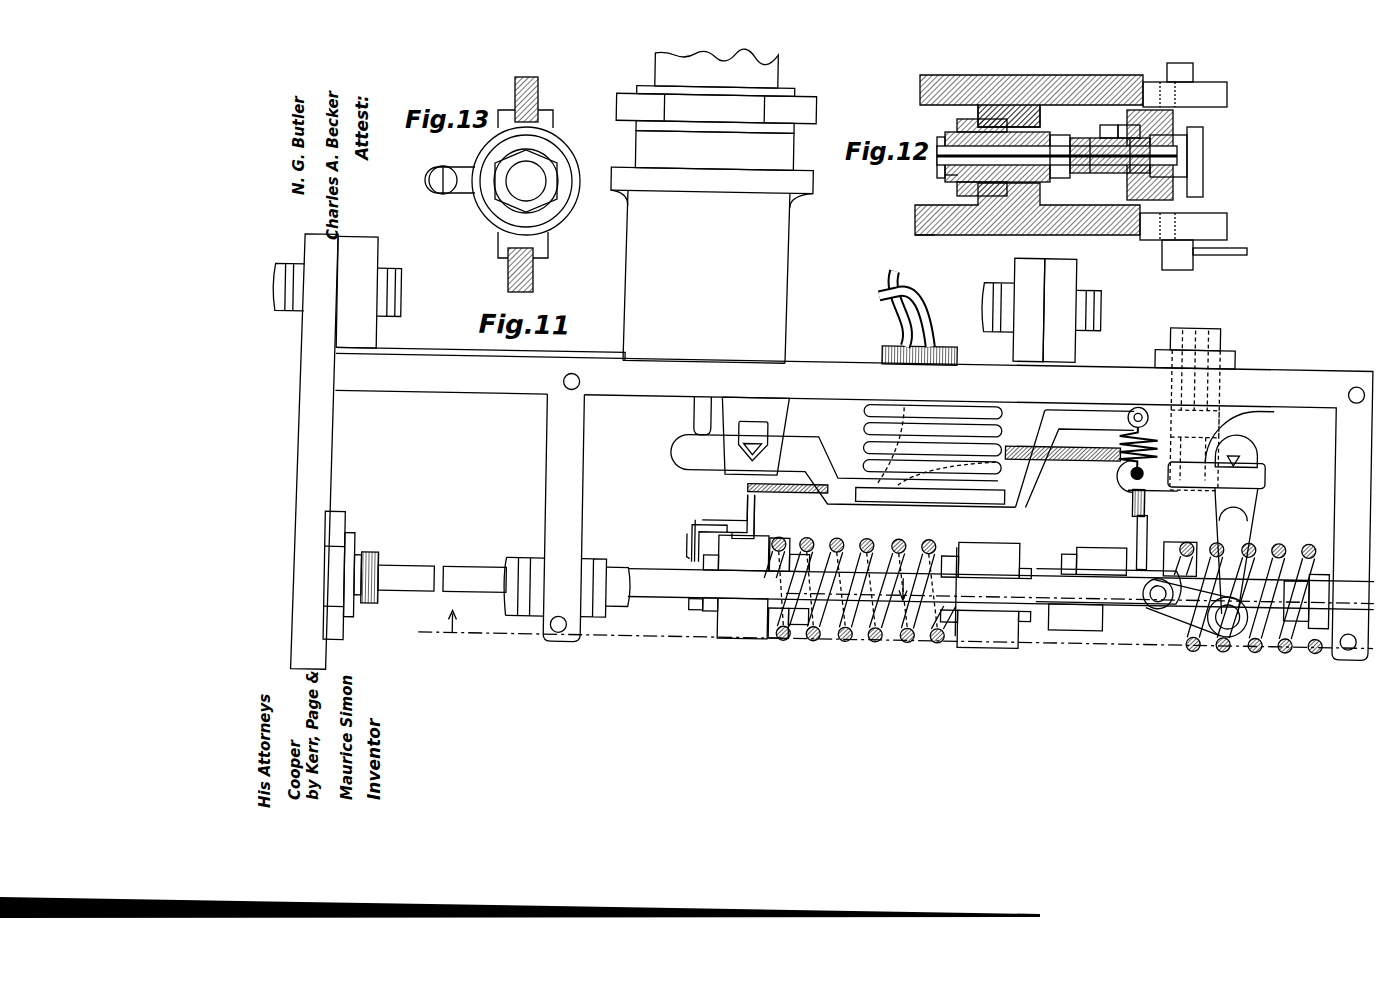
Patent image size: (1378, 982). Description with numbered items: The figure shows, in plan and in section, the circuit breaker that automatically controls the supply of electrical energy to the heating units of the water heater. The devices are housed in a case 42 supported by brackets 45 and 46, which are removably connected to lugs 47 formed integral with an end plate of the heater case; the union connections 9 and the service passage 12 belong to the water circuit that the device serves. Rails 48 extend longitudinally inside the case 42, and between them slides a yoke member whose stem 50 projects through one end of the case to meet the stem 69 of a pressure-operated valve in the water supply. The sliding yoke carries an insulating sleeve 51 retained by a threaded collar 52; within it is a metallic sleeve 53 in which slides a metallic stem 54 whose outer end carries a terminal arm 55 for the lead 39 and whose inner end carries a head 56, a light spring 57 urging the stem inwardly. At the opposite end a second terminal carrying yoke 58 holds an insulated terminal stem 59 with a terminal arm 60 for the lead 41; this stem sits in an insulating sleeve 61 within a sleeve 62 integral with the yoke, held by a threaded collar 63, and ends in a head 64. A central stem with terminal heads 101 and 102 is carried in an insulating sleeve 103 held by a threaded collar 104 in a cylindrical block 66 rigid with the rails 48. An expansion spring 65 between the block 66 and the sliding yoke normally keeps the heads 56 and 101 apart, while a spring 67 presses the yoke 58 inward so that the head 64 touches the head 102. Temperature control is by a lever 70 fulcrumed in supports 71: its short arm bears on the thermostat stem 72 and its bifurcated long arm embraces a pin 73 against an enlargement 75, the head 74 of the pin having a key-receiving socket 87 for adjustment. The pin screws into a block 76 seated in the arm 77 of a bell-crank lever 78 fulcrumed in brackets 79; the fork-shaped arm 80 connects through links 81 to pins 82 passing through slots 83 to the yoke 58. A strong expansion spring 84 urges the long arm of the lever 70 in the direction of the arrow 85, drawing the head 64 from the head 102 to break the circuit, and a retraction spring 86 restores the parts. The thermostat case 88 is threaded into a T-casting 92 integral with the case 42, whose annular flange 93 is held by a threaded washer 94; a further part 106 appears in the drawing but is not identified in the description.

In FIG. 11, the union connections 9 is at (896, 643).
In FIG. 11, the service passage 12 is at (1051, 583).
In FIG. 11, the lead 39 is at (920, 310).
In FIG. 11, the electrical lead 41 is at (898, 282).
In FIG. 11, the case 42 is at (852, 503).
In FIG. 11, the bracket 45 is at (1072, 311).
In FIG. 11, the bracket 46 is at (312, 262).
In FIG. 11, the lugs 47 is at (690, 298).
In FIG. 13, the rails 48 is at (538, 95).
In FIG. 12, the rails 48 is at (1080, 85).
In FIG. 11, the rails 48 is at (1001, 589).
In FIG. 11, the stem 50 is at (500, 582).
In FIG. 11, the sleeve of insulating material 51 is at (712, 609).
In FIG. 11, the threaded collar 52 is at (785, 555).
In FIG. 11, the metallic sleeve 53 is at (722, 620).
In FIG. 11, the metallic stem 54 is at (695, 604).
In FIG. 11, the terminal arm 55 is at (690, 545).
In FIG. 11, the head 56 is at (885, 624).
In FIG. 11, the light spring 57 is at (850, 624).
In FIG. 13, the second terminal carrying yoke 58 is at (553, 112).
In FIG. 12, the second terminal carrying yoke 58 is at (1203, 135).
In FIG. 11, the second terminal carrying yoke 58 is at (1195, 540).
In FIG. 12, the insulated terminal stem 59 is at (1100, 135).
In FIG. 13, the terminal arm 60 is at (445, 195).
In FIG. 11, the terminal arm 60 is at (1150, 540).
In FIG. 12, the sleeve of insulating material 61 is at (1120, 138).
In FIG. 13, the sleeve 62 is at (565, 150).
In FIG. 12, the sleeve 62 is at (1095, 175).
In FIG. 11, the sleeve 62 is at (1087, 589).
In FIG. 12, the threaded collar 63 is at (1075, 172).
In FIG. 11, the threaded collar 63 is at (1080, 622).
In FIG. 13, the head 64 is at (518, 187).
In FIG. 12, the head 64 is at (1085, 170).
In FIG. 11, the head 64 is at (1068, 552).
In FIG. 11, the spring 65 is at (902, 536).
In FIG. 12, the cylindrical block 66 is at (980, 120).
In FIG. 11, the cylindrical block 66 is at (986, 595).
In FIG. 11, the spring 67 is at (1285, 540).
In FIG. 11, the stem 69 is at (420, 584).
In FIG. 11, the lever 70 is at (1025, 490).
In FIG. 11, the supports 71 is at (778, 430).
In FIG. 11, the stem 72 is at (698, 417).
In FIG. 11, the pin 73 is at (1205, 400).
In FIG. 11, the head 74 is at (1218, 340).
In FIG. 11, the enlargement 75 is at (1150, 420).
In FIG. 11, the block 76 is at (1242, 450).
In FIG. 11, the arm 77 is at (1125, 468).
In FIG. 11, the bell-crank lever 78 is at (1245, 435).
In FIG. 11, the brackets 79 is at (1267, 466).
In FIG. 11, the arm 80 is at (1250, 500).
In FIG. 12, the links 81 is at (1193, 72).
In FIG. 11, the links 81 is at (1238, 625).
In FIG. 12, the pins 82 is at (1183, 161).
In FIG. 11, the pins 82 is at (1165, 600).
In FIG. 11, the slots 83 is at (1150, 600).
In FIG. 11, the expansion spring 84 is at (880, 405).
In FIG. 11, the arrow 85 is at (852, 444).
In FIG. 11, the retraction spring 86 is at (1136, 398).
In FIG. 11, the key-receiving socket 87 is at (1200, 340).
In FIG. 11, the outer case 88 is at (717, 68).
In FIG. 11, the T-casting 92 is at (710, 276).
In FIG. 11, the annular flange 93 is at (712, 162).
In FIG. 11, the threaded washer 94 is at (716, 109).
In FIG. 12, the terminal head 101 is at (937, 162).
In FIG. 11, the terminal head 101 is at (950, 600).
In FIG. 12, the terminal head 102 is at (1068, 134).
In FIG. 11, the terminal head 102 is at (1058, 622).
In FIG. 12, the sleeve of insulating material 103 is at (950, 132).
In FIG. 11, the sleeve of insulating material 103 is at (950, 552).
In FIG. 12, the threaded collar 104 is at (950, 230).
In FIG. 11, the threaded collar 104 is at (965, 615).
In FIG. 12, the shoulder 106 is at (952, 178).